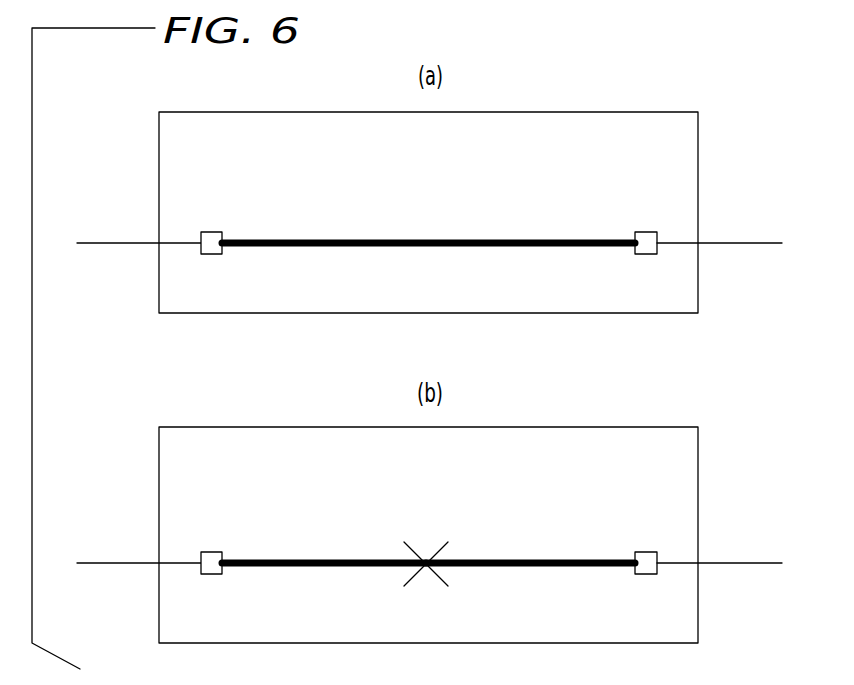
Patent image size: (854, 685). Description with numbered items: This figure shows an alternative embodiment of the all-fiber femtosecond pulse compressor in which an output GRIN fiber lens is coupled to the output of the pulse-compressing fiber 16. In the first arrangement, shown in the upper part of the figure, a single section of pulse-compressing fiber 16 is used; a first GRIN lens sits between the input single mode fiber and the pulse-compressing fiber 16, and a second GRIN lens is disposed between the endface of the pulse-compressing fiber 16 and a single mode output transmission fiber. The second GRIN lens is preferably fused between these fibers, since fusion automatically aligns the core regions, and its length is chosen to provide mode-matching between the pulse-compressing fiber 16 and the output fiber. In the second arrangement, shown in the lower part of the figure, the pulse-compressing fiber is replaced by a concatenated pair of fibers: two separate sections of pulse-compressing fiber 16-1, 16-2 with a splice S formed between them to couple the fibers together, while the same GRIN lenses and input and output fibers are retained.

The pulse-compressing fiber 16 is at (387, 239).
The first section of pulse-compressing fiber 16-1 is at (322, 566).
The second section of pulse-compressing fiber 16-2 is at (495, 567).
The splice S is at (445, 545).